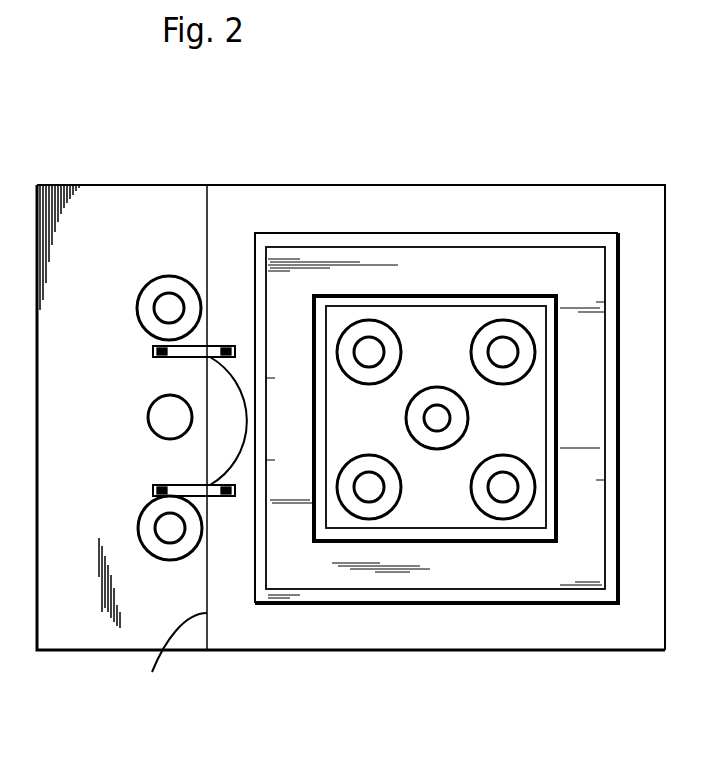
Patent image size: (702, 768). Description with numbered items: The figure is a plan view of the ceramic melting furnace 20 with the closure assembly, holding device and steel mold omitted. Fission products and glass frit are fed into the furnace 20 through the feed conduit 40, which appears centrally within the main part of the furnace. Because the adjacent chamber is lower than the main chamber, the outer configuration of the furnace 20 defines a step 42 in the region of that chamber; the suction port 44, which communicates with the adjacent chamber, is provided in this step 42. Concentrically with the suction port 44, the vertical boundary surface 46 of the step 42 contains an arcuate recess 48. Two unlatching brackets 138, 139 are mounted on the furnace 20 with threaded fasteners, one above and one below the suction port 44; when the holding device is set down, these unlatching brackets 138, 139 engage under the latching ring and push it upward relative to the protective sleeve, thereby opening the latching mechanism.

The melting furnace 20 is at (493, 168).
The feed conduit 40 is at (437, 412).
The step 42 is at (70, 628).
The suction port 44 is at (160, 405).
The vertical boundary surface 46 is at (174, 658).
The arcuate recess 48 is at (245, 442).
The unlatching bracket 138 is at (212, 345).
The unlatching bracket 139 is at (212, 496).